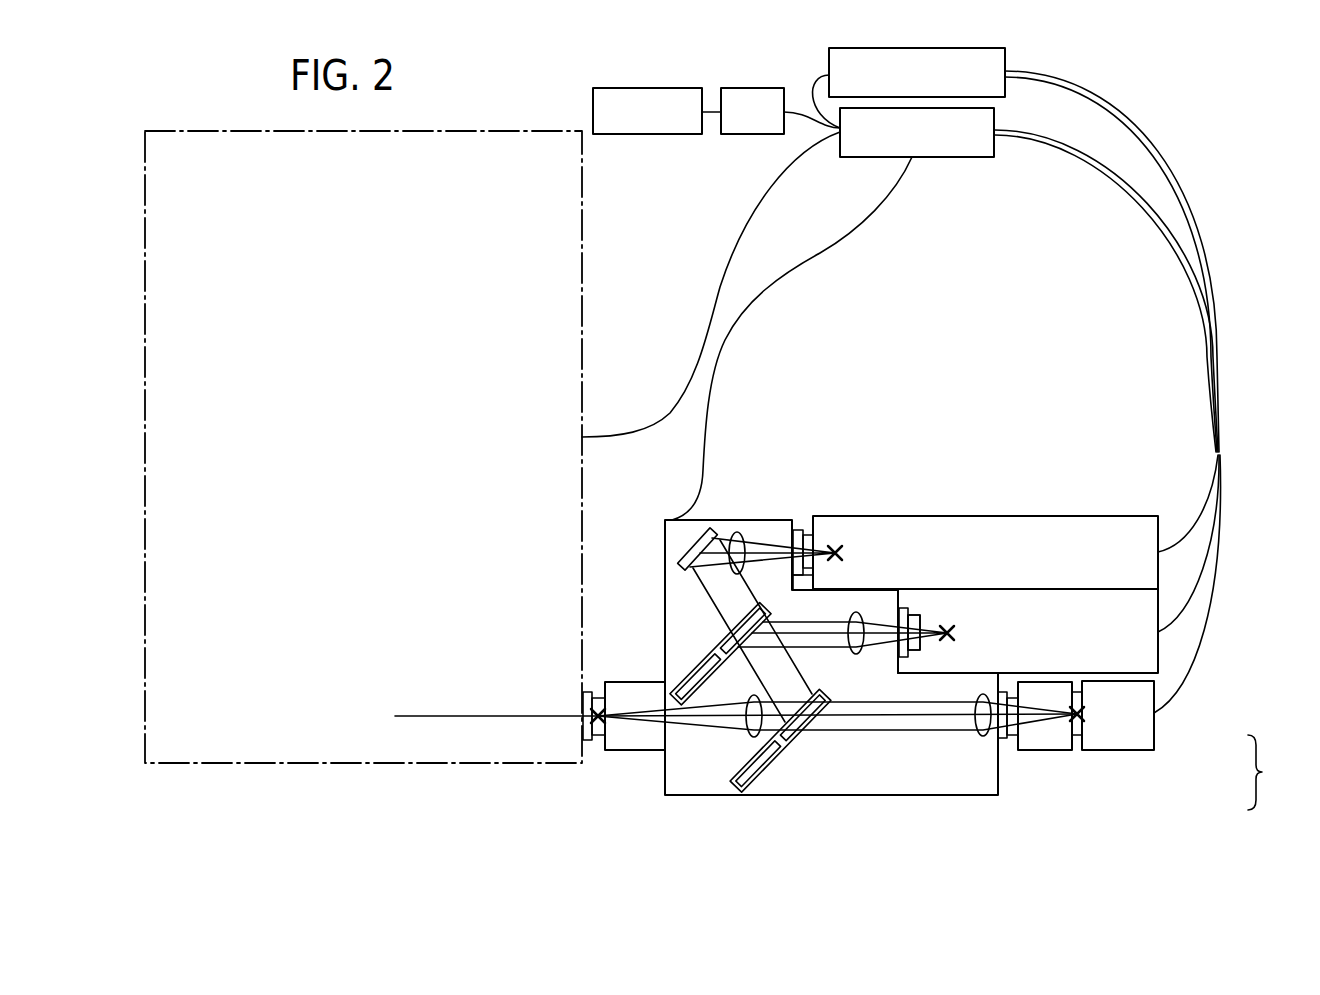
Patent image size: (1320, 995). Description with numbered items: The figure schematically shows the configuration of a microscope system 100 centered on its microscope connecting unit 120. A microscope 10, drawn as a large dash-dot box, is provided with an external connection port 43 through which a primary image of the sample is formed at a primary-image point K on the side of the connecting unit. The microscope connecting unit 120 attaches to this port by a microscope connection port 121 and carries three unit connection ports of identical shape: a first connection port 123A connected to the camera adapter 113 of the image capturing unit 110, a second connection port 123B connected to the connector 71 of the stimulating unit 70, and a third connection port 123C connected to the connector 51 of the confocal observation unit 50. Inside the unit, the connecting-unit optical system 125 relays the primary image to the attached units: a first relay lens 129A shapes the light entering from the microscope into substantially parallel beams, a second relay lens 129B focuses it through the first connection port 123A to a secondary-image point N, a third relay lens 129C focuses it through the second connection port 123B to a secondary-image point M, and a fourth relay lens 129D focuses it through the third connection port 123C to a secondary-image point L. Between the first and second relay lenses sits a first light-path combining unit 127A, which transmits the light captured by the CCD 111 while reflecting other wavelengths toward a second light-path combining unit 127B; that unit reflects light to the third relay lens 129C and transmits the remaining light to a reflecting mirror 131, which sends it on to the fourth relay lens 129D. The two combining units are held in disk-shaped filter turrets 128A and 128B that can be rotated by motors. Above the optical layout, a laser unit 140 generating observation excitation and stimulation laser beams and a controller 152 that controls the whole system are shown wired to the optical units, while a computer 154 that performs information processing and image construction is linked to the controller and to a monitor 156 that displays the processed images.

The microscope system 100 is at (117, 200).
The microscope 10 is at (145, 410).
The monitor 156 is at (592, 104).
The computer 154 is at (720, 130).
The laser unit 140 is at (1005, 62).
The controller 152 is at (955, 157).
The microscope connecting unit 120 is at (790, 519).
The connecting-unit optical system 125 is at (891, 770).
The confocal observation unit 50 is at (1100, 518).
The stimulating unit 70 is at (1140, 652).
The connector 51 is at (807, 576).
The connector 71 is at (917, 655).
The first connection port 123A is at (1002, 739).
The second connection port 123B is at (903, 607).
The third connection port 123C is at (800, 529).
The microscope connection port 121 is at (625, 681).
The external connection port 43 is at (583, 732).
The reflecting mirror 131 is at (689, 546).
The first light-path combining unit 127A is at (755, 789).
The second light-path combining unit 127B is at (722, 641).
The filter turret 128A is at (765, 770).
The filter turret 128B is at (687, 677).
The first relay lens 129A is at (750, 735).
The second relay lens 129B is at (984, 737).
The third relay lens 129C is at (858, 654).
The fourth relay lens 129D is at (736, 531).
The image capturing unit 110 is at (1276, 772).
The CCD 111 is at (1123, 733).
The camera adapter 113 is at (1082, 692).
The primary-image point K is at (598, 724).
The secondary-image point L is at (837, 548).
The secondary-image point M is at (955, 633).
The secondary-image point N is at (1077, 722).